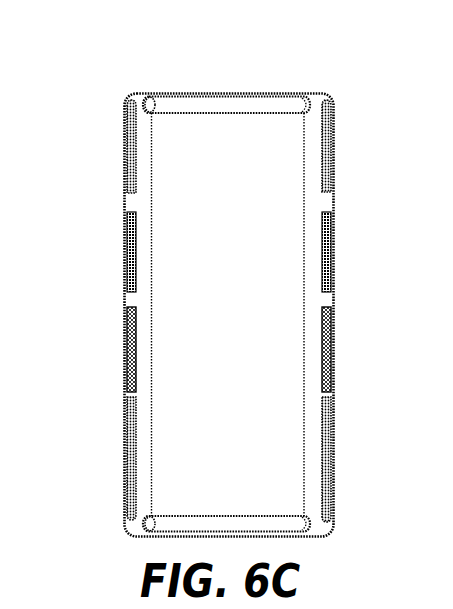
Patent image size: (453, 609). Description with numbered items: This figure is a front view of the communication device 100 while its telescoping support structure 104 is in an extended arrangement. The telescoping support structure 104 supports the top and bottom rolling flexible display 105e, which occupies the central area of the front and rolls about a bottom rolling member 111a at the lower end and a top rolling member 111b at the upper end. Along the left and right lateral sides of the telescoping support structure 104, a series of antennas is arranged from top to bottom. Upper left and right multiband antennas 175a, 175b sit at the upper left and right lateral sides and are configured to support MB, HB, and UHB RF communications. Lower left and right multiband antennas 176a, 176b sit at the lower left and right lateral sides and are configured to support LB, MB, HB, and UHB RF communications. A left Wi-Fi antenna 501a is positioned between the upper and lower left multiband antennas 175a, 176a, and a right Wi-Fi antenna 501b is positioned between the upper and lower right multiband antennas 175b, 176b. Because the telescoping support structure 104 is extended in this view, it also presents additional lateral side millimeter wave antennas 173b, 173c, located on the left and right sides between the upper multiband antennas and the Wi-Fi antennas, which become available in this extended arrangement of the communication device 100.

The communication device 100 is at (68, 88).
The telescoping support structure 104 is at (333, 523).
The top and bottom rolling flexible display 105e is at (250, 331).
The bottom rolling member 111a is at (309, 529).
The top rolling member 111b is at (314, 100).
The upper left multiband antenna 175a is at (118, 192).
The upper right multiband antenna 175b is at (340, 102).
The lateral side mmWave antenna 173b is at (118, 292).
The lateral side mmWave antenna 173c is at (340, 292).
The left Wi-Fi antenna 501a is at (118, 393).
The right Wi-Fi antenna 501b is at (340, 393).
The lower left multiband antenna 176a is at (118, 525).
The lower right multiband antenna 176b is at (340, 520).